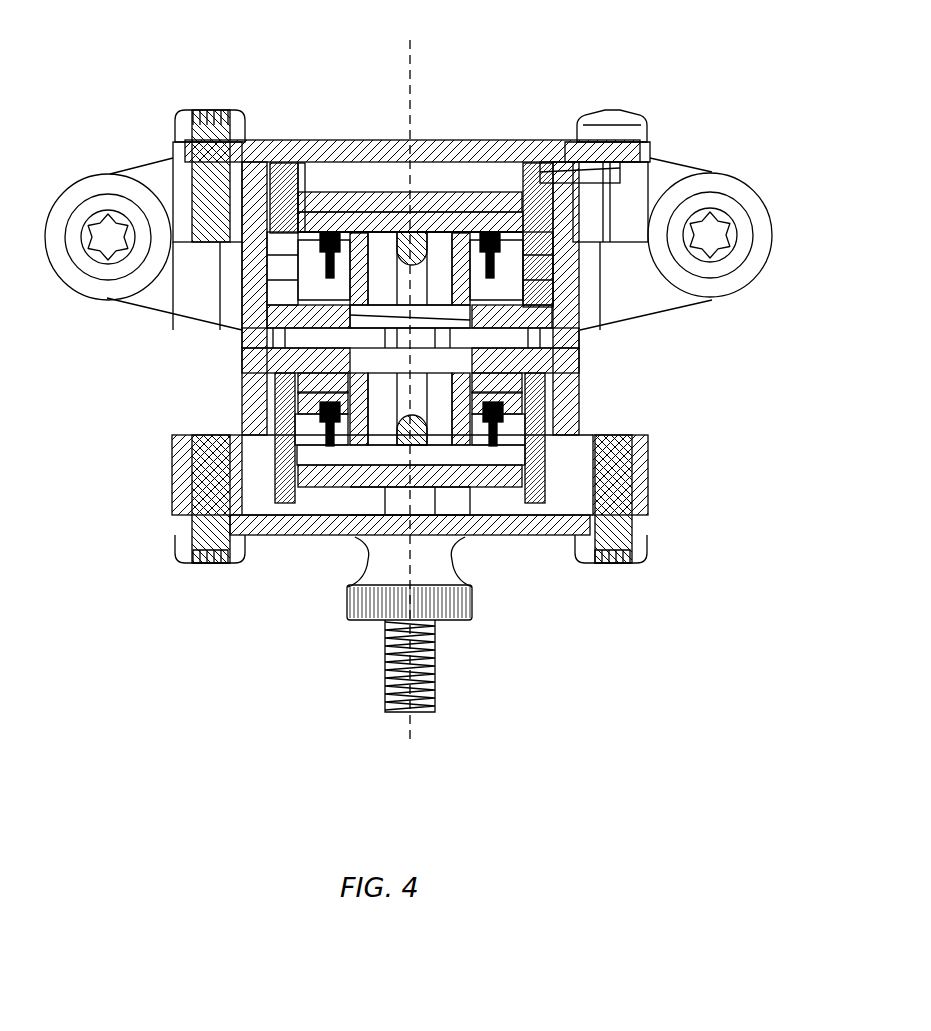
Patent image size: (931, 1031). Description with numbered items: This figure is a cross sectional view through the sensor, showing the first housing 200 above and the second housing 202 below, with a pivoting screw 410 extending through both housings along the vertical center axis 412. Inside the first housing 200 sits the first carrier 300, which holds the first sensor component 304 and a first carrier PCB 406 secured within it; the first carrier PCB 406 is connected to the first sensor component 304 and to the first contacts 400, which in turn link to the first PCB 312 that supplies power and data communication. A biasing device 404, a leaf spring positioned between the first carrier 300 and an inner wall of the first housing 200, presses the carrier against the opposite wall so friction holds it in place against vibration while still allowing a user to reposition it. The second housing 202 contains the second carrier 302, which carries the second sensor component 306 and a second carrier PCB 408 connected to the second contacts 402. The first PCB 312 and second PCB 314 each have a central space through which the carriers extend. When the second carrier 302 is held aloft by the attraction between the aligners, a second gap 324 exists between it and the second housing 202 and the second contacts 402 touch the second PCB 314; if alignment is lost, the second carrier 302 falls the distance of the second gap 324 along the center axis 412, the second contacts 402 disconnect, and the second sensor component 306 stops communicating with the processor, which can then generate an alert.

The first housing 200 is at (247, 272).
The second housing 202 is at (233, 503).
The first carrier 300 is at (280, 275).
The second carrier 302 is at (590, 433).
The first sensor component 304 is at (414, 240).
The second sensor component 306 is at (392, 447).
The first printed circuit board 312 is at (302, 262).
The second printed circuit board 314 is at (307, 398).
The second gap 324 is at (237, 503).
The first contacts 400 is at (328, 200).
The second contacts 402 is at (330, 442).
The biasing device 404 is at (547, 213).
The first carrier PCB 406 is at (305, 230).
The second carrier PCB 408 is at (383, 505).
The pivoting screw 410 is at (385, 678).
The center axis 412 is at (412, 56).